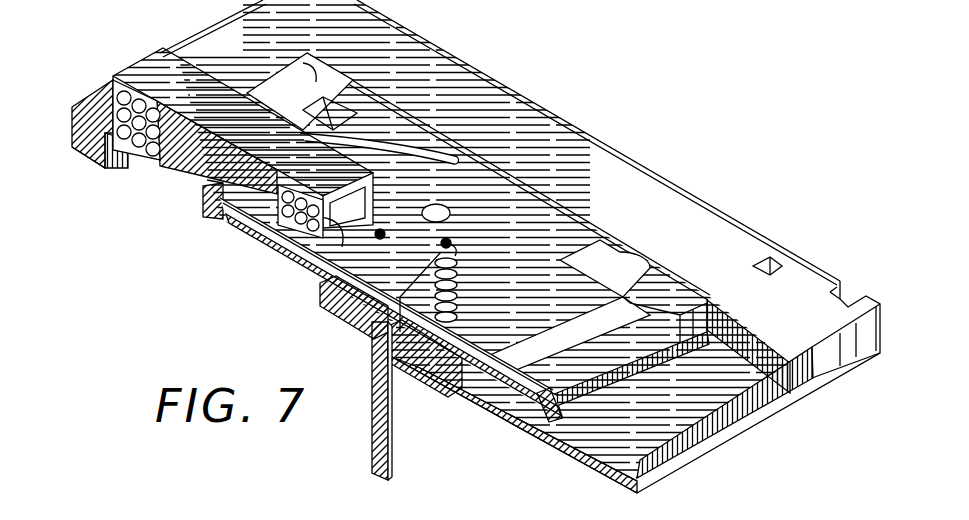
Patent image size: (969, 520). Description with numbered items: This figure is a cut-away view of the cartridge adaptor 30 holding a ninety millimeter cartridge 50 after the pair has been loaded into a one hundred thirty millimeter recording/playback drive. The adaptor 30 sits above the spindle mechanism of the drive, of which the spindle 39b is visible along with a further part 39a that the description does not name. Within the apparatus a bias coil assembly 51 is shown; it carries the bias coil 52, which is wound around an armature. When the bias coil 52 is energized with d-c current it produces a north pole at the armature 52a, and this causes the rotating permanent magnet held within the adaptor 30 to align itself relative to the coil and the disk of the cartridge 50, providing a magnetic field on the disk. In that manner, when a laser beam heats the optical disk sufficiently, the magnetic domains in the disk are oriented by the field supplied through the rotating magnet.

The cartridge adaptor 30 is at (681, 190).
The 90 mm cartridge 50 is at (687, 281).
The bias coil assembly 51 is at (152, 62).
The bias coil 52 is at (277, 241).
The armature 52a is at (186, 180).
The bracket 39a is at (430, 381).
The spindle 39b is at (397, 440).